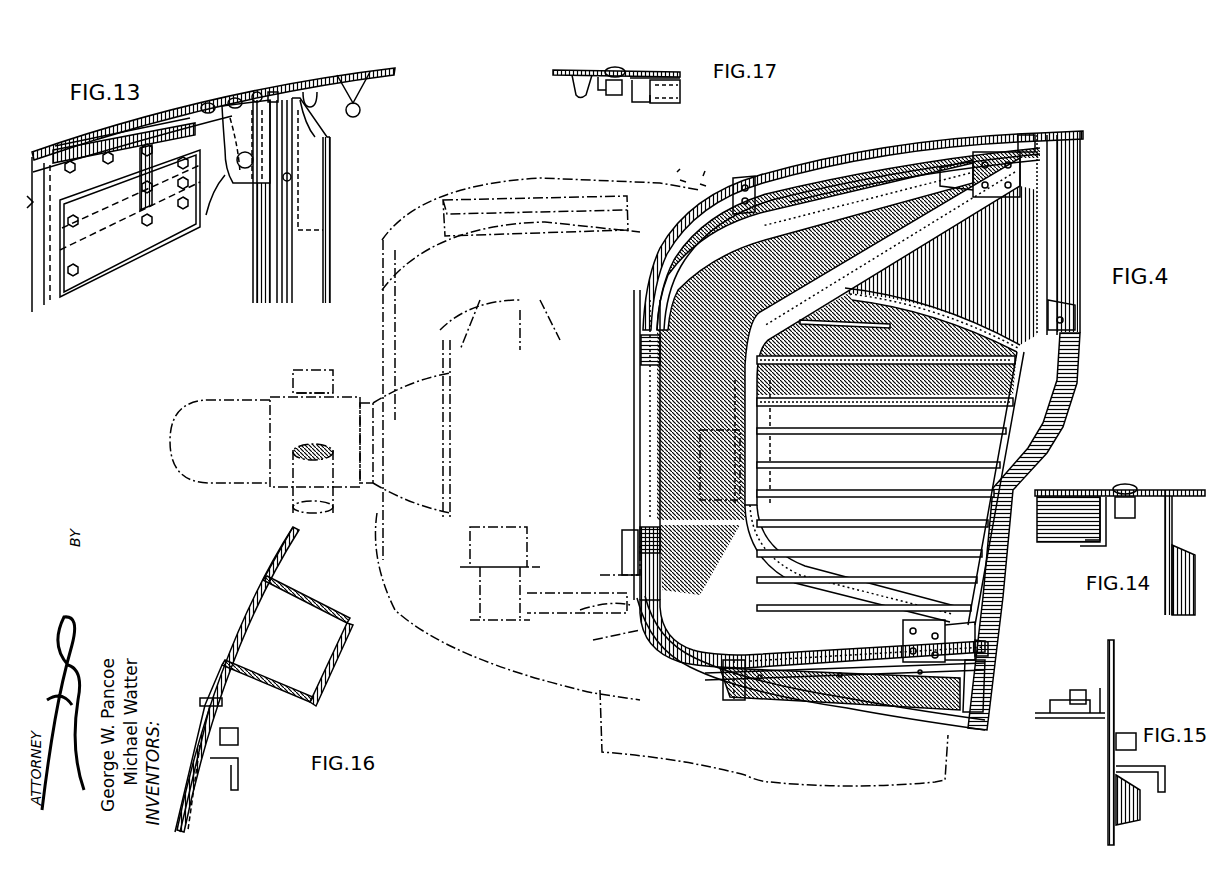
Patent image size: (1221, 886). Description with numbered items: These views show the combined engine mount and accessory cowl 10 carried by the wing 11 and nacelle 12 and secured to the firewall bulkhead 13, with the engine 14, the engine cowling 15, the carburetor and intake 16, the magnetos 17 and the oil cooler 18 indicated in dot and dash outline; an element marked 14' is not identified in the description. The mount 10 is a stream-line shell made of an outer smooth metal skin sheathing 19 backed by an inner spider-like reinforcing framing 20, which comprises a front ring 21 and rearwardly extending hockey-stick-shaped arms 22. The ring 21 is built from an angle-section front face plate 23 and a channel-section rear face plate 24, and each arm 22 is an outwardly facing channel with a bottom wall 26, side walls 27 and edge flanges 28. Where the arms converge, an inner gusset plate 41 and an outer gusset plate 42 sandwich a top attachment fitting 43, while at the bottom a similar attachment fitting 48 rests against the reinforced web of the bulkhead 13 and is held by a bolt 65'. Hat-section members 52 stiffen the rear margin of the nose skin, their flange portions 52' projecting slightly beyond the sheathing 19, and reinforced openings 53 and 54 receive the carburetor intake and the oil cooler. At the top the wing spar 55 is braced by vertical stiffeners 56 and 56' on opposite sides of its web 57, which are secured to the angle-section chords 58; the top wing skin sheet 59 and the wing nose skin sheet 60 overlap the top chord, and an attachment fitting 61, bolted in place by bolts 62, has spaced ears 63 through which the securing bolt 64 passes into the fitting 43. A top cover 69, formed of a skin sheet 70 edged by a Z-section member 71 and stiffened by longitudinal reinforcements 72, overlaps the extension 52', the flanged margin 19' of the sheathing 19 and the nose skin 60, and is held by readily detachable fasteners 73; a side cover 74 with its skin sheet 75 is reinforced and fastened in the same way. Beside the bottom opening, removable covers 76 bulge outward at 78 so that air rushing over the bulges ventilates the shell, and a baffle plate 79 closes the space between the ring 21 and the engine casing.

In FIG. 4, the combined engine mount and accessory cowl 10 is at (852, 150).
In FIG. 15, the wing 11 is at (1068, 721).
In FIG. 4, the wing 11 is at (1082, 128).
In FIG. 14, the nacelle 12 is at (1196, 489).
In FIG. 4, the nacelle 12 is at (985, 734).
In FIG. 14, the bulkhead or firewall 13 is at (1165, 539).
In FIG. 4, the bulkhead or firewall 13 is at (1035, 432).
In FIG. 4, the engine 14 is at (569, 470).
In FIG. 4, the window frame member 14' is at (999, 488).
In FIG. 4, the engine cowling 15 is at (548, 178).
In FIG. 4, the carburetor and intake 16 is at (795, 346).
In FIG. 4, the magnetos 17 is at (776, 396).
In FIG. 4, the oil cooler 18 is at (803, 770).
In FIG. 17, the skin sheathing 19 is at (616, 60).
In FIG. 16, the skin sheathing 19 is at (238, 679).
In FIG. 4, the skin sheathing 19 is at (848, 225).
In FIG. 16, the flanged margin of skin sheet 19' is at (227, 712).
In FIG. 4, the inner reinforcing spider-like framing 20 is at (818, 262).
In FIG. 4, the front ring 21 is at (640, 524).
In FIG. 13, the arms 22 is at (42, 306).
In FIG. 4, the arms 22 is at (885, 190).
In FIG. 4, the angle-section front face plate 23 is at (622, 562).
In FIG. 4, the shallow channel-section rear face plate 24 is at (665, 578).
In FIG. 16, the bottom wall 26 is at (348, 646).
In FIG. 16, the side walls 27 is at (318, 606).
In FIG. 16, the edge flanges 28 is at (283, 556).
In FIG. 13, the inner gusset plate 41 is at (110, 262).
In FIG. 13, the outer gusset plate 42 is at (102, 140).
In FIG. 13, the attachment fitting 43 is at (243, 172).
In FIG. 4, the bottom attachment fitting 48 is at (975, 686).
In FIG. 17, the hat-section members 52 is at (573, 93).
In FIG. 17, the flange portion 52' is at (611, 95).
In FIG. 4, the top opening 53 is at (705, 178).
In FIG. 4, the bottom opening 54 is at (697, 686).
In FIG. 13, the wing spar 55 is at (331, 270).
In FIG. 4, the wing spar 55 is at (1050, 240).
In FIG. 13, the vertical stiffener 56 is at (330, 203).
In FIG. 13, the vertical stiffener 56' is at (240, 233).
In FIG. 13, the web 57 is at (268, 270).
In FIG. 4, the web 57 is at (1080, 303).
In FIG. 13, the angle section chords 58 is at (280, 93).
In FIG. 4, the angle section chords 58 is at (1040, 136).
In FIG. 13, the top reinforced skin sheet 59 is at (355, 75).
In FIG. 13, the wing nose skin sheet 60 is at (246, 92).
In FIG. 15, the wing nose skin sheet 60 is at (1046, 720).
In FIG. 13, the attachment fitting 61 is at (258, 91).
In FIG. 13, the bolts 62 is at (210, 102).
In FIG. 13, the spaced ears 63 is at (242, 168).
In FIG. 13, the securing bolt 64 is at (247, 172).
In FIG. 4, the securing bolt 64 is at (978, 630).
In FIG. 4, the bolt 65' is at (999, 655).
In FIG. 17, the top cover 69 is at (665, 72).
In FIG. 4, the top cover 69 is at (975, 146).
In FIG. 17, the skin sheet 70 is at (620, 70).
In FIG. 17, the Z section member 71 is at (645, 103).
In FIG. 14, the Z section member 71 is at (1104, 540).
In FIG. 15, the Z section member 71 is at (1152, 766).
In FIG. 16, the Z section member 71 is at (222, 761).
In FIG. 4, the Z section member 71 is at (788, 442).
In FIG. 17, the reinforcements 72 is at (672, 103).
In FIG. 14, the reinforcements 72 is at (1055, 541).
In FIG. 15, the reinforcements 72 is at (1130, 816).
In FIG. 16, the reinforcements 72 is at (197, 805).
In FIG. 4, the reinforcements 72 is at (950, 462).
In FIG. 17, the holding means 73 is at (620, 96).
In FIG. 14, the holding means 73 is at (1126, 518).
In FIG. 15, the holding means 73 is at (1128, 732).
In FIG. 16, the holding means 73 is at (239, 740).
In FIG. 14, the side cover or door 74 is at (1080, 489).
In FIG. 15, the side cover or door 74 is at (1107, 789).
In FIG. 16, the side cover or door 74 is at (188, 748).
In FIG. 4, the side cover or door 74 is at (912, 527).
In FIG. 14, the skin sheet 75 is at (1052, 489).
In FIG. 15, the skin sheet 75 is at (1107, 815).
In FIG. 4, the removable cover 76 is at (845, 710).
In FIG. 4, the bulged portion 78 is at (918, 722).
In FIG. 4, the baffle plate 79 is at (640, 286).